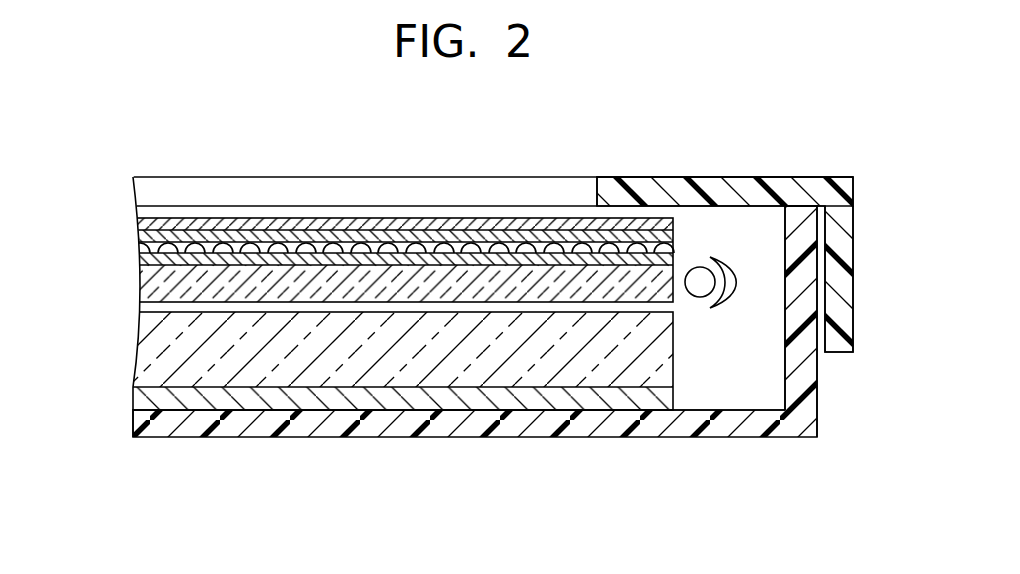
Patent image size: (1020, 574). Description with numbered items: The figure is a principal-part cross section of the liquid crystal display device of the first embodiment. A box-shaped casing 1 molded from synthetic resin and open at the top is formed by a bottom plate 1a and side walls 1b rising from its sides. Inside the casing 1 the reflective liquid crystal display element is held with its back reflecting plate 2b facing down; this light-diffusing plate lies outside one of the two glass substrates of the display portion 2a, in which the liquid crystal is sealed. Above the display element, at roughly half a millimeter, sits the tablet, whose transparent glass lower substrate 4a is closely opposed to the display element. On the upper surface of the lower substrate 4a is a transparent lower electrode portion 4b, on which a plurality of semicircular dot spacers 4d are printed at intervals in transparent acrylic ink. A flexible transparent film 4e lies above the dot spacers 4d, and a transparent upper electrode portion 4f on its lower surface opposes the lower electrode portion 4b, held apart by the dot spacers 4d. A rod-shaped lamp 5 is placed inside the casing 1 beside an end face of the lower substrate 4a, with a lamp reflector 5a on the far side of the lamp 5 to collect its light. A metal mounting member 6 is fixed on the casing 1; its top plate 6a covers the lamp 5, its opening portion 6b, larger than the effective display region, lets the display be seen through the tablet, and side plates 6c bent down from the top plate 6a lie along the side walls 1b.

The casing 1 is at (712, 450).
The bottom plate 1a is at (608, 439).
The side wall 1b is at (803, 373).
The display portion 2a is at (174, 356).
The back reflecting plate 2b is at (170, 400).
The lower substrate 4a is at (150, 289).
The lower electrode portion 4b is at (138, 264).
The dot spacers 4d is at (225, 243).
The film 4e is at (129, 226).
The upper electrode portion 4f is at (132, 240).
The lamp 5 is at (698, 270).
The lamp reflector 5a is at (729, 262).
The mounting member 6 is at (838, 172).
The top plate 6a is at (642, 186).
The opening portion 6b is at (448, 191).
The side plate 6c is at (840, 233).